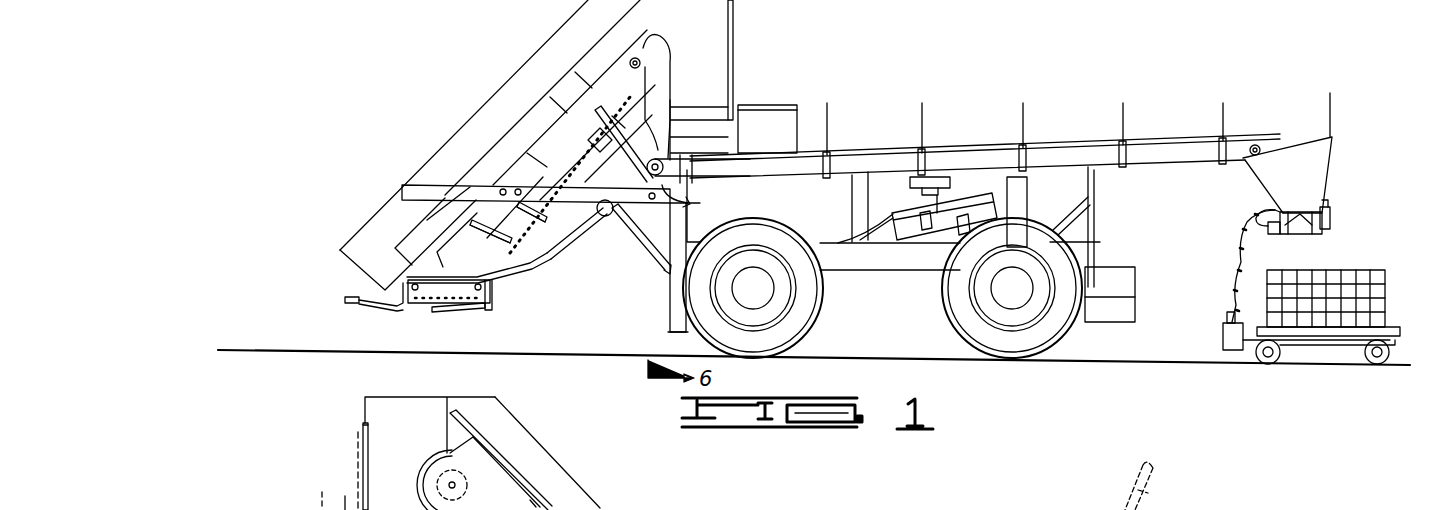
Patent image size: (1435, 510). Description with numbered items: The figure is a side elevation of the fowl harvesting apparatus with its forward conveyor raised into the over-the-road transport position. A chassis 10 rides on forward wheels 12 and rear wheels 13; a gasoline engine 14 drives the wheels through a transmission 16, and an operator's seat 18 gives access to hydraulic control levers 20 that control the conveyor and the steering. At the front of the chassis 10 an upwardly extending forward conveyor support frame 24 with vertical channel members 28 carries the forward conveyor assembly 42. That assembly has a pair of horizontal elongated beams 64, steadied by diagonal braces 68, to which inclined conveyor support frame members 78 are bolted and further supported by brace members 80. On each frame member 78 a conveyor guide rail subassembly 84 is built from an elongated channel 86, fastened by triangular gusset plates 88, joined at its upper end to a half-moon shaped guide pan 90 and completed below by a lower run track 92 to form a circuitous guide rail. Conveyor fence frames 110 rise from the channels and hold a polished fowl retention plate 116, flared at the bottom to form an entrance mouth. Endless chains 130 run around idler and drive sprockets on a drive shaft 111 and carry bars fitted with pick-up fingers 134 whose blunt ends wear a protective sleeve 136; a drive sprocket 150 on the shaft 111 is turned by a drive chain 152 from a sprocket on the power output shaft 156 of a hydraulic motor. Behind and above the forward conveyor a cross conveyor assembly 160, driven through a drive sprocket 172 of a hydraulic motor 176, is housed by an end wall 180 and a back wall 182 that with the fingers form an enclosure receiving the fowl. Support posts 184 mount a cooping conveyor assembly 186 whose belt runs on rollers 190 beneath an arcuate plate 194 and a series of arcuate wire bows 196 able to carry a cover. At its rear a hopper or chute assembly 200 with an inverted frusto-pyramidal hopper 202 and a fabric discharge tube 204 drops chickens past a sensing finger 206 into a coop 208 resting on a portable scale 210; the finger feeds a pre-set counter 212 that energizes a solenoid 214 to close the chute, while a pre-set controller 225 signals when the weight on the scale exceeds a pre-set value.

In FIG. 1, the chassis 10 is at (856, 282).
In FIG. 1, the forward wheels 12 is at (800, 330).
In FIG. 1, the rear wheels 13 is at (1062, 335).
In FIG. 1, the gasoline engine 14 is at (940, 236).
In FIG. 1, the transmission 16 is at (870, 228).
In FIG. 1, the operator's seat 18 is at (958, 188).
In FIG. 1, the hydraulic control levers 20 is at (858, 188).
In FIG. 1, the forward conveyor support frame 24 is at (656, 305).
In FIG. 1, the channel members 28 is at (668, 325).
In FIG. 1, the forward conveyor assembly 42 is at (482, 112).
In FIG. 8, the forward conveyor assembly 42 is at (588, 462).
In FIG. 1, the elongated beams 64 is at (402, 190).
In FIG. 1, the diagonal braces 68 is at (640, 248).
In FIG. 1, the inclined conveyor support frame member 78 is at (452, 254).
In FIG. 1, the brace members 80 is at (695, 155).
In FIG. 1, the conveyor guide rail subassemblies 84 is at (588, 222).
In FIG. 1, the elongated channel 86 is at (597, 92).
In FIG. 1, the triangular gusset plates 88 is at (463, 237).
In FIG. 1, the half-moon shaped guide pan 90 is at (656, 97).
In FIG. 1, the lower run track 92 is at (558, 265).
In FIG. 1, the conveyor fence frames 110 is at (498, 122).
In FIG. 8, the conveyor fence frames 110 is at (535, 465).
In FIG. 1, the drive shaft 111 is at (630, 58).
In FIG. 1, the fowl retention plate 116 is at (493, 149).
In FIG. 8, the fowl retention plate 116 is at (501, 460).
In FIG. 1, the endless chains 130 is at (420, 303).
In FIG. 1, the pick-up fingers 134 is at (370, 307).
In FIG. 1, the protective sleeve 136 is at (352, 296).
In FIG. 8, the protective sleeve 136 is at (1156, 474).
In FIG. 8, the drive sprocket 150 is at (430, 475).
In FIG. 8, the drive chain 152 is at (437, 492).
In FIG. 8, the power output shaft 156 is at (538, 505).
In FIG. 8, the cross conveyor assembly 160 is at (346, 416).
In FIG. 8, the drive sprocket 172 is at (320, 496).
In FIG. 8, the hydraulic motor 176 is at (334, 471).
In FIG. 1, the end wall 180 is at (699, 80).
In FIG. 8, the end wall 180 is at (430, 425).
In FIG. 1, the back wall 182 is at (735, 55).
In FIG. 8, the back wall 182 is at (362, 445).
In FIG. 1, the support posts 184 is at (1095, 218).
In FIG. 1, the cooping conveyor assembly 186 is at (1195, 178).
In FIG. 1, the rollers 190 is at (695, 204).
In FIG. 1, the arcuate plate 194 is at (767, 129).
In FIG. 8, the arcuate plate 194 is at (310, 509).
In FIG. 1, the arcuate wire bows 196 is at (830, 118).
In FIG. 1, the hopper or chute assembly 200 is at (1350, 172).
In FIG. 1, the chute or hopper 202 is at (1283, 163).
In FIG. 1, the discharge tube 204 is at (1292, 235).
In FIG. 1, the sensing finger 206 is at (1322, 228).
In FIG. 1, the coop 208 is at (1260, 270).
In FIG. 1, the portable scale 210 is at (1312, 343).
In FIG. 1, the pre-set counter 212 is at (1262, 234).
In FIG. 1, the solenoid 214 is at (1330, 217).
In FIG. 1, the pre-set controller 225 is at (1225, 340).